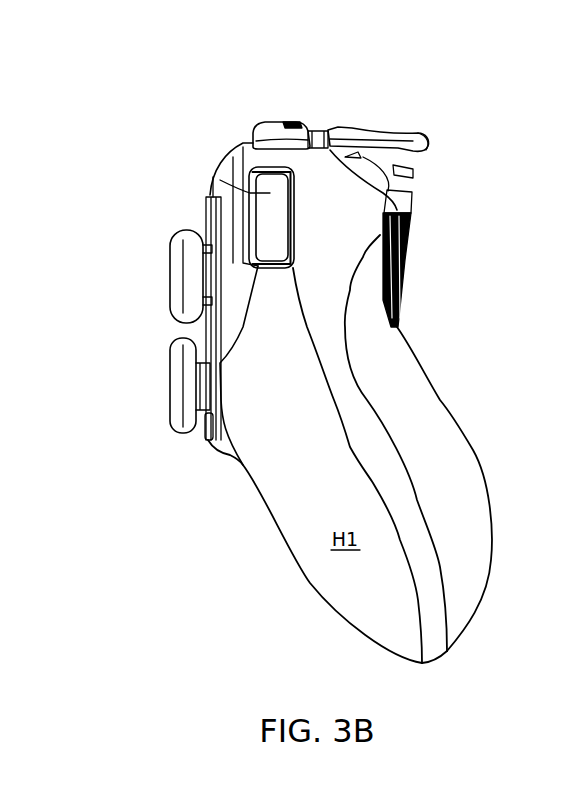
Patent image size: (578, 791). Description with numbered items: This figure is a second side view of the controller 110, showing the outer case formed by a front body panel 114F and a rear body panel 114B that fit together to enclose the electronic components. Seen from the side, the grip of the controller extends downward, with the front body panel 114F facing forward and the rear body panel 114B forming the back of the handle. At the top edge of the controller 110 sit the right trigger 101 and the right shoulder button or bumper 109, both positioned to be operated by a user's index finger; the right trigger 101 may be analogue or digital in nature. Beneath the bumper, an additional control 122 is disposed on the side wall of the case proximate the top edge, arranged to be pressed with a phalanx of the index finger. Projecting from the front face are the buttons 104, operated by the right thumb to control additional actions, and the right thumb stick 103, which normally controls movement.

The controller 110 is at (453, 105).
The right trigger 101 is at (380, 128).
The right shoulder button or bumper 109 is at (265, 122).
The additional control 122 is at (232, 163).
The buttons 104 is at (203, 270).
The right thumb stick 103 is at (177, 383).
The front body panel 114F is at (270, 490).
The rear body panel 114B is at (467, 458).